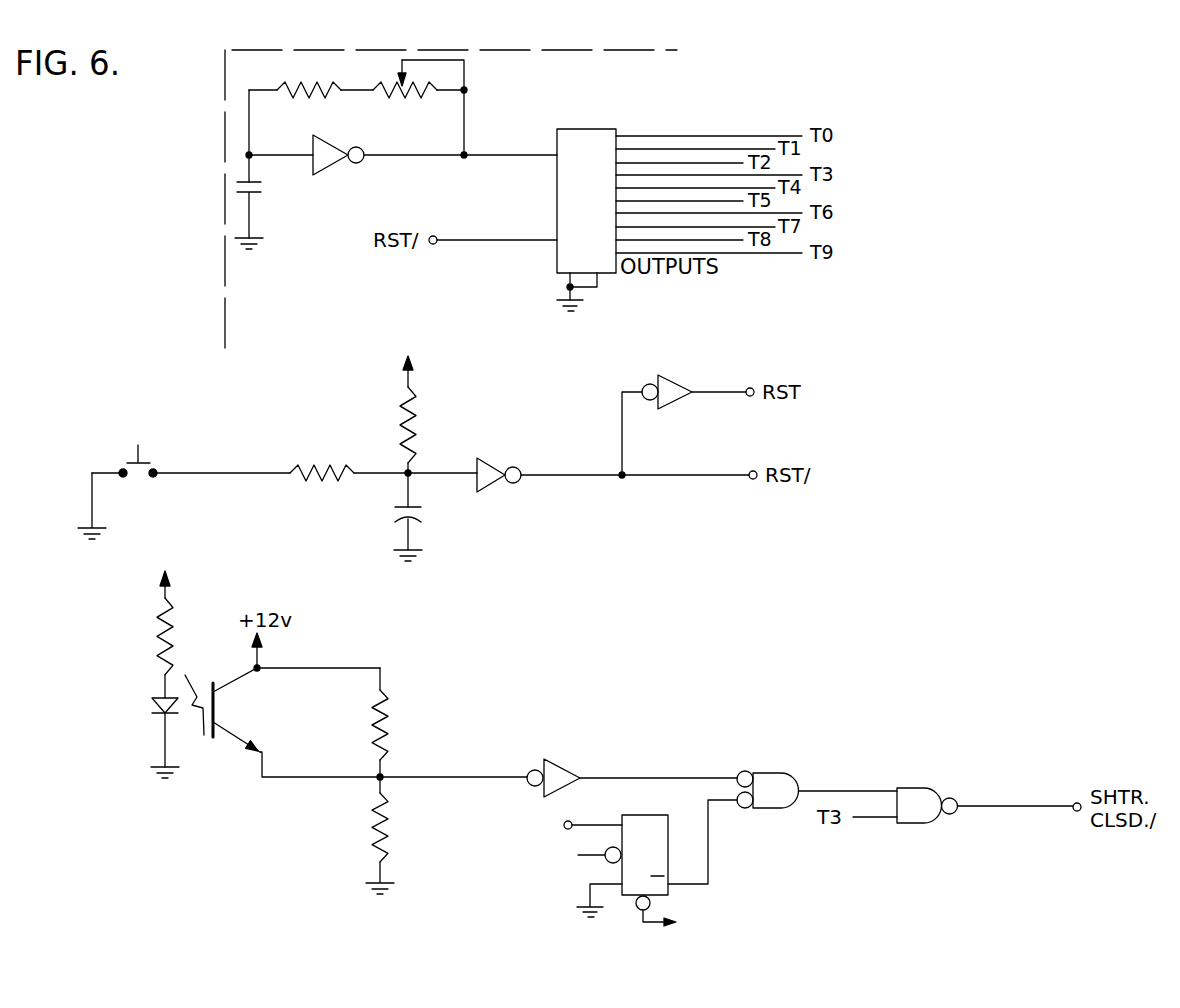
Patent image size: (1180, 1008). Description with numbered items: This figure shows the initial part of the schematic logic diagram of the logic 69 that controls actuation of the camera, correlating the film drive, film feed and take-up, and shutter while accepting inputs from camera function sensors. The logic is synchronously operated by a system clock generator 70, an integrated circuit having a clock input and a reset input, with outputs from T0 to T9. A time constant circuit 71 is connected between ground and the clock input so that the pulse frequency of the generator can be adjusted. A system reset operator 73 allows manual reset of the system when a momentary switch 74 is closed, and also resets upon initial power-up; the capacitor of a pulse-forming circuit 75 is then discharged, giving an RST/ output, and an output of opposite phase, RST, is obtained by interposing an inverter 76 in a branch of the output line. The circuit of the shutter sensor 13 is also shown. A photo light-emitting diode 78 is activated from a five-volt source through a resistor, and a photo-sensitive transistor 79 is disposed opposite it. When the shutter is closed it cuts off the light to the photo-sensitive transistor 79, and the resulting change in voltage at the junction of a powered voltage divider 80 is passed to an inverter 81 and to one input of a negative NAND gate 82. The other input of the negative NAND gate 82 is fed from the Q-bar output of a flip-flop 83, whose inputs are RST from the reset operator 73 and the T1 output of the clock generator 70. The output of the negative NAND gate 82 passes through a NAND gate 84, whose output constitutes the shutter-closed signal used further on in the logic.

The shutter sensor 13 is at (208, 783).
The logic 69 is at (225, 243).
The system clock generator 70 is at (578, 261).
The time constant circuit 71 is at (380, 112).
The system reset operator 73 is at (483, 411).
The momentary switch 74 is at (161, 447).
The pulse-forming circuit 75 is at (422, 468).
The inverter 76 is at (681, 387).
The photo light-emitting diode 78 is at (161, 697).
The photo-sensitive transistor 79 is at (217, 713).
The powered voltage divider 80 is at (389, 769).
The inverter 81 is at (577, 764).
The negative NAND gate 82 is at (780, 764).
The flip-flop 83 is at (665, 806).
The NAND gate 84 is at (928, 779).